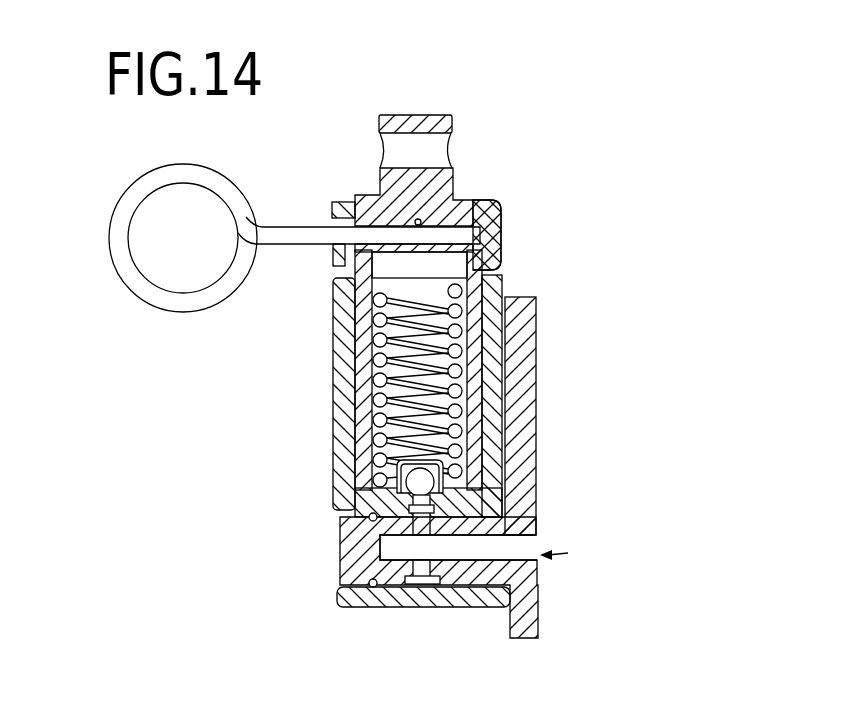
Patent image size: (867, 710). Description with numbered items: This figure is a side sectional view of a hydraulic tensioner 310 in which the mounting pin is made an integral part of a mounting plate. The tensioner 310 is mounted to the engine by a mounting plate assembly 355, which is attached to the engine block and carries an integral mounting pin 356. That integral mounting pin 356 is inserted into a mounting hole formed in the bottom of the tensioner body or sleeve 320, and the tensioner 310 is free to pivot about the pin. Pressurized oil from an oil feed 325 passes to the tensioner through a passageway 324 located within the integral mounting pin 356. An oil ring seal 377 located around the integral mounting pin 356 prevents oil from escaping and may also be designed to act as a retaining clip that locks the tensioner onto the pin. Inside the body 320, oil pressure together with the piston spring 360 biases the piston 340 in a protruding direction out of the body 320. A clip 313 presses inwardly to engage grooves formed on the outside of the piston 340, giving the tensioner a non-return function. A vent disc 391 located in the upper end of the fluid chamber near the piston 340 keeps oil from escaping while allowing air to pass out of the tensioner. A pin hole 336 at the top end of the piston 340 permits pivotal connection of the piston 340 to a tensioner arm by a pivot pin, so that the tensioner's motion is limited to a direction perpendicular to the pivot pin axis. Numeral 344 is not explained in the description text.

The tensioner 310 is at (322, 365).
The clip 313 is at (493, 206).
The tensioner body or sleeve 320 is at (333, 408).
The passageway 324 is at (512, 548).
The oil feed 325 is at (577, 550).
The pin hole 336 is at (452, 152).
The piston 340 is at (365, 433).
The cap 344 is at (378, 121).
The mounting plate assembly 355 is at (537, 420).
The integral mounting pin 356 is at (340, 560).
The piston spring 360 is at (386, 464).
The oil ring seal 377 is at (376, 586).
The vent disc 391 is at (383, 263).